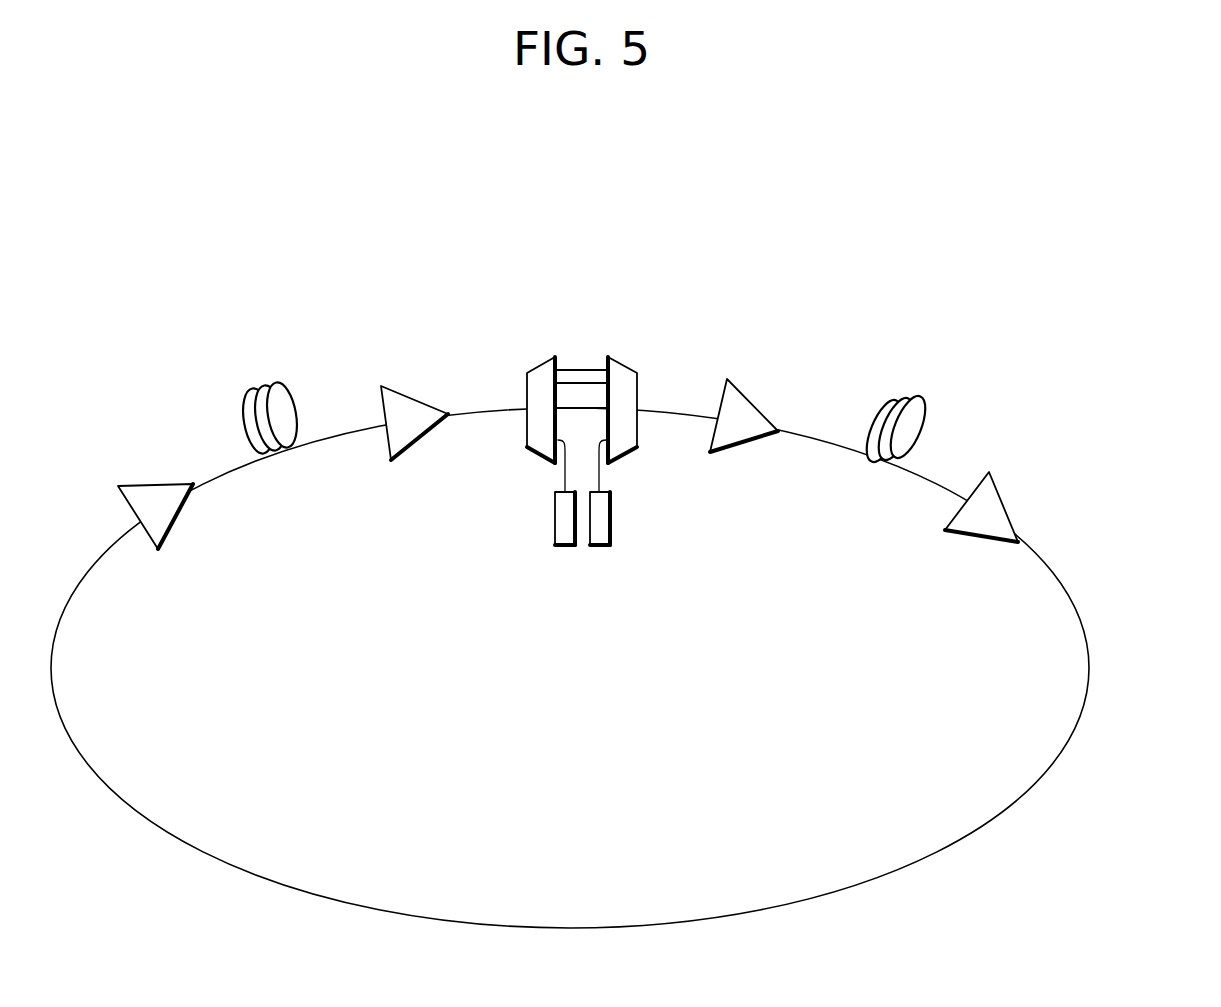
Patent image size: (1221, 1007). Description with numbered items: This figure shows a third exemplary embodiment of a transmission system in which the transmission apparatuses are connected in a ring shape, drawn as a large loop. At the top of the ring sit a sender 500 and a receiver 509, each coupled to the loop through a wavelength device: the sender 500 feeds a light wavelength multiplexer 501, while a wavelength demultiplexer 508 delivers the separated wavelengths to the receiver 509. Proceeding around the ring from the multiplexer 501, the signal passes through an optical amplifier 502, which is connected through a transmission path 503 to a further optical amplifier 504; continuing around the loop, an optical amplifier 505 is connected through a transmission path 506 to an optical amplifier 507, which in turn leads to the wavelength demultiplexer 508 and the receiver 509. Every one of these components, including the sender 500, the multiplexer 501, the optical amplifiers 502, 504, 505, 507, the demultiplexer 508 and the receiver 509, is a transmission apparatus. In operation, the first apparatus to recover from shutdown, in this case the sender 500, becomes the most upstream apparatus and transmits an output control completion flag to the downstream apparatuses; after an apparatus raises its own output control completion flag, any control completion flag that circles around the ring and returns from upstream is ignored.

The sender 500 is at (610, 515).
The light wavelength multiplexer 501 is at (612, 357).
The optical amplifier 502 is at (733, 382).
The transmission path 503 is at (920, 400).
The optical amplifier 504 is at (995, 483).
The optical amplifier 505 is at (130, 485).
The transmission path 506 is at (250, 388).
The optical amplifier 507 is at (390, 387).
The wavelength demultiplexer 508 is at (547, 358).
The receiver 509 is at (555, 520).